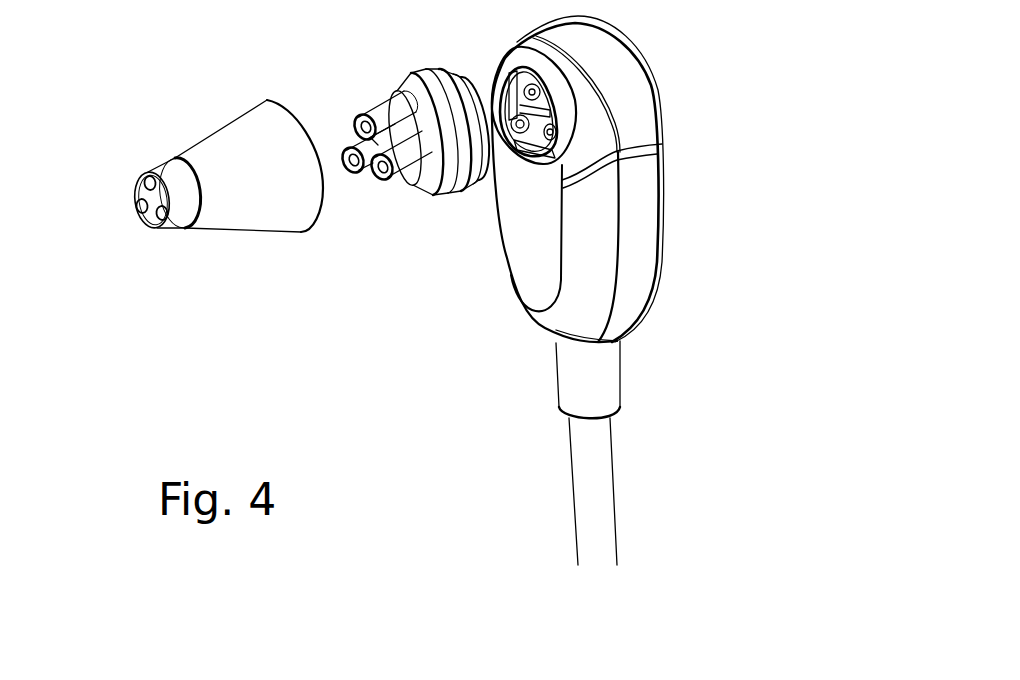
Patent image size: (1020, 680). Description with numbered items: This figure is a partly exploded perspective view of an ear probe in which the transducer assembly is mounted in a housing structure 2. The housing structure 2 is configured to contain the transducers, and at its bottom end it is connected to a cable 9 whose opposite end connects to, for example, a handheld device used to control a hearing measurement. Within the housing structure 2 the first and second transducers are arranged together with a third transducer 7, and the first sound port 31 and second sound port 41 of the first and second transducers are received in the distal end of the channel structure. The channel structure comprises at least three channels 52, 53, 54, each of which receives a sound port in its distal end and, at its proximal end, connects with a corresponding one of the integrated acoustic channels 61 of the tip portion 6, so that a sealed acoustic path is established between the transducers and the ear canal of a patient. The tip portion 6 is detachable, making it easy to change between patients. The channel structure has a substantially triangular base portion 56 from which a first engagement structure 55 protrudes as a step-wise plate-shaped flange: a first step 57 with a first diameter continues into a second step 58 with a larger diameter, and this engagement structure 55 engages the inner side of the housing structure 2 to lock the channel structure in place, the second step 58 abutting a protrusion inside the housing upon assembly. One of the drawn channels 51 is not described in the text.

The housing structure 2 is at (601, 213).
The tip portion 6 is at (224, 240).
The third transducer 7 is at (601, 145).
The cable 9 is at (603, 480).
The first sound port 31 is at (494, 80).
The second sound port 41 is at (548, 128).
The first sound tube 51 is at (372, 183).
The channel 52 is at (403, 183).
The channel 53 is at (364, 113).
The channel 54 is at (357, 141).
The first engagement structure 55 is at (390, 143).
The base portion 56 is at (405, 88).
The first step 57 is at (452, 196).
The second step 58 is at (465, 188).
The integrated acoustic channels 61 is at (167, 198).